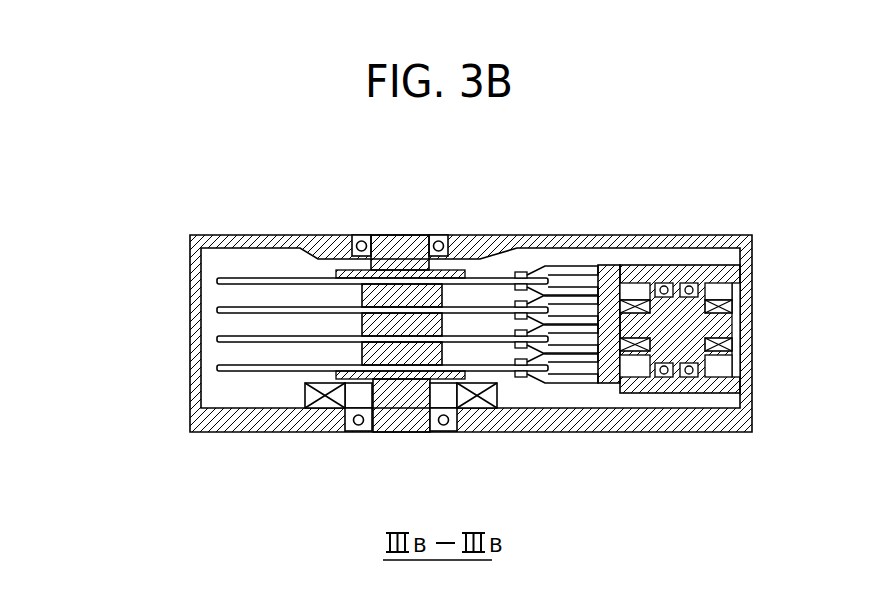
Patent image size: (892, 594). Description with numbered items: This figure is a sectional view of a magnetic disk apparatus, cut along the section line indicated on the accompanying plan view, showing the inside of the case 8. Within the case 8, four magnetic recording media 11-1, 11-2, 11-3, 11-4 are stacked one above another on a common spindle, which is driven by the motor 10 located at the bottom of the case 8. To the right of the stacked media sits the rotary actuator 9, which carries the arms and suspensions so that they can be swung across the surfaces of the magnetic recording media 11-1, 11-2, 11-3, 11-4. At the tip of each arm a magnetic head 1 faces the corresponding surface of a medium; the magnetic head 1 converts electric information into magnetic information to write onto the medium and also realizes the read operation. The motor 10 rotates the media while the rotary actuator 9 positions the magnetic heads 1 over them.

The magnetic head 1 is at (520, 272).
The case 8 is at (303, 424).
The rotary actuator 9 is at (728, 347).
The spindle motor 10 is at (447, 397).
The magnetic recording medium 11-1 is at (233, 286).
The magnetic recording medium 11-2 is at (233, 315).
The magnetic recording medium 11-3 is at (233, 344).
The magnetic recording medium 11-4 is at (233, 373).